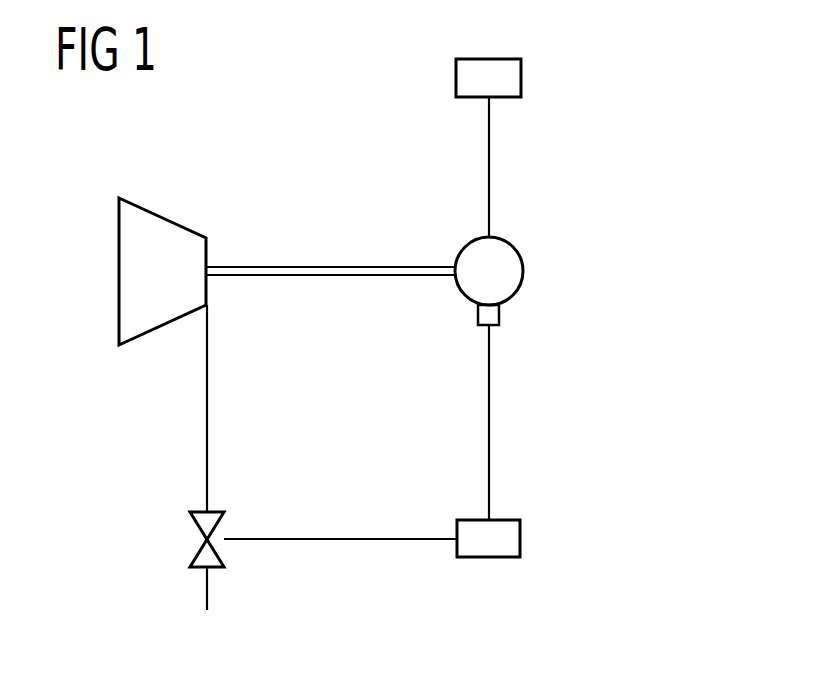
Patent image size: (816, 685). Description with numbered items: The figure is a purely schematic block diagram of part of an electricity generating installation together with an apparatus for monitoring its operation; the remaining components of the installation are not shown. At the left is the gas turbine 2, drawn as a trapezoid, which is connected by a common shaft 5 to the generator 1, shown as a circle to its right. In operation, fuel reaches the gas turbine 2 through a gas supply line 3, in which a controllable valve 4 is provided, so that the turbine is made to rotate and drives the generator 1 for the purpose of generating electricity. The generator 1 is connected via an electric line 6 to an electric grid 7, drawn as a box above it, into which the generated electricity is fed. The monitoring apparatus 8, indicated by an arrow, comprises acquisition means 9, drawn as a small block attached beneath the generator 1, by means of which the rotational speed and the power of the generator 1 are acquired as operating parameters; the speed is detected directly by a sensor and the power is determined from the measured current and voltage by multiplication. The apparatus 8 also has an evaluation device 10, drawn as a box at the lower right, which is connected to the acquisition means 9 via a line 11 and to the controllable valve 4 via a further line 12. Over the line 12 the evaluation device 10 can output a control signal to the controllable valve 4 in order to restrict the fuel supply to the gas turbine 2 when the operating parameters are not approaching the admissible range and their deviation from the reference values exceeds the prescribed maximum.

The generator 1 is at (526, 268).
The gas turbine 2 is at (118, 278).
The gas supply line 3 is at (206, 427).
The controllable valve 4 is at (196, 556).
The common shaft 5 is at (333, 264).
The electric line 6 is at (490, 168).
The electric grid 7 is at (521, 78).
The apparatus for monitoring the operation 8 is at (612, 420).
The acquisition means 9 is at (502, 316).
The evaluation device 10 is at (491, 558).
The line 11 is at (491, 430).
The further line 12 is at (350, 541).